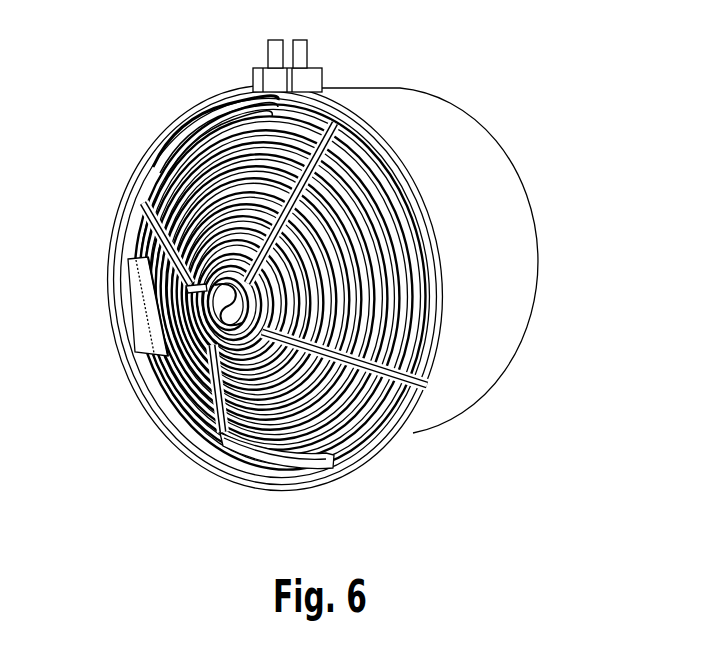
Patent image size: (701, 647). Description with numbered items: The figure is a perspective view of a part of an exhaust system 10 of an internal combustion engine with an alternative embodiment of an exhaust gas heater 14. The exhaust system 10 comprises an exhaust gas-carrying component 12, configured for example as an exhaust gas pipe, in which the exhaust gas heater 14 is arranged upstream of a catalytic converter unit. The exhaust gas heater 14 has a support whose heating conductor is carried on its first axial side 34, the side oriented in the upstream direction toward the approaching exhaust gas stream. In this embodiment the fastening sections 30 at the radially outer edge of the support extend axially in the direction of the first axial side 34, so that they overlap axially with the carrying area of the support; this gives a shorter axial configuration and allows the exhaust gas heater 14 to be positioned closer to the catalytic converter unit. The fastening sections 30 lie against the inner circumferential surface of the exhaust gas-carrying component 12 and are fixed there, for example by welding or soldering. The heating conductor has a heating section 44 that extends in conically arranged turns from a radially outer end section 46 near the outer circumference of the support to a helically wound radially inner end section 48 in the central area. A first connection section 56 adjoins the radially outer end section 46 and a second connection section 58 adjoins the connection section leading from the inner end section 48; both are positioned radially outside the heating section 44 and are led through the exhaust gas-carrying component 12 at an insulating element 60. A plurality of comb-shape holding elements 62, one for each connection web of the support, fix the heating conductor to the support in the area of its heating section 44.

The exhaust system 10 is at (552, 116).
The exhaust gas-carrying component 12 is at (548, 287).
The exhaust gas heater 14 is at (193, 413).
The fastening sections 30 is at (293, 465).
The first axial side 34 is at (138, 344).
The heating section 44 is at (393, 272).
The radially outer end section 46 is at (233, 118).
The radially inner end section 48 is at (205, 328).
The first connection section 56 is at (267, 52).
The second connection section 58 is at (308, 57).
The terminal block 60 is at (253, 73).
The comb-shape holding elements 62 is at (160, 233).